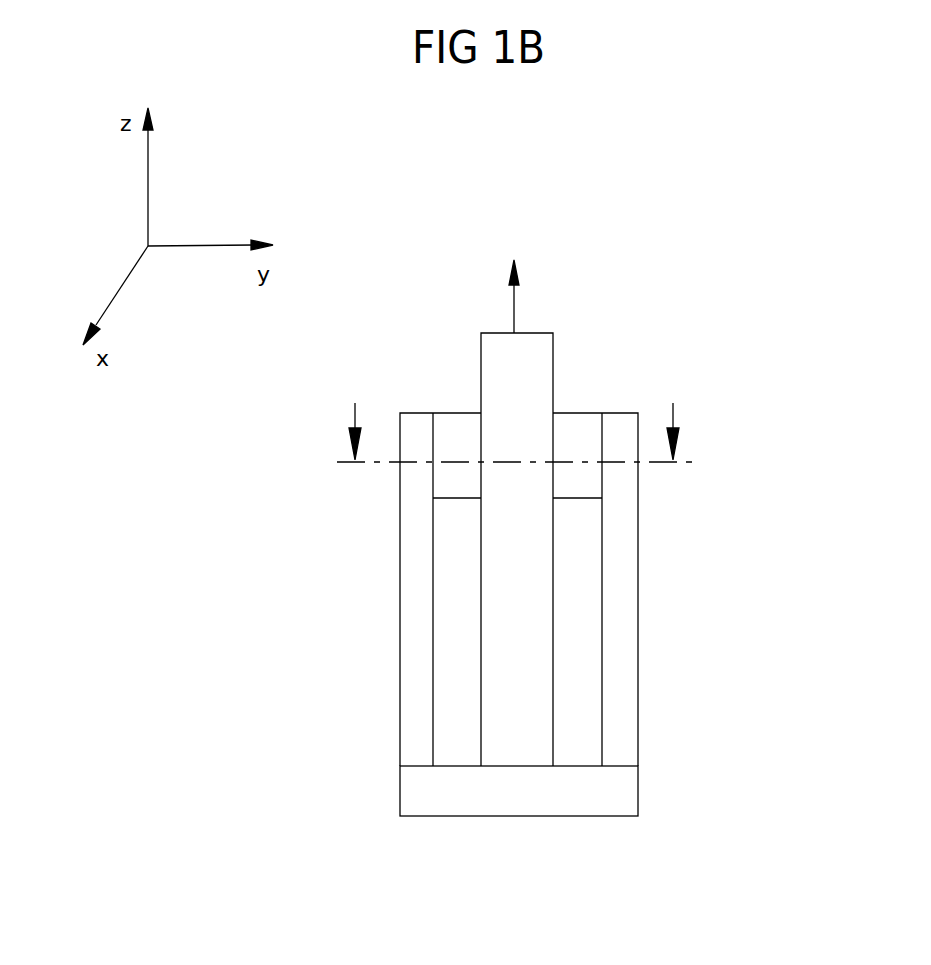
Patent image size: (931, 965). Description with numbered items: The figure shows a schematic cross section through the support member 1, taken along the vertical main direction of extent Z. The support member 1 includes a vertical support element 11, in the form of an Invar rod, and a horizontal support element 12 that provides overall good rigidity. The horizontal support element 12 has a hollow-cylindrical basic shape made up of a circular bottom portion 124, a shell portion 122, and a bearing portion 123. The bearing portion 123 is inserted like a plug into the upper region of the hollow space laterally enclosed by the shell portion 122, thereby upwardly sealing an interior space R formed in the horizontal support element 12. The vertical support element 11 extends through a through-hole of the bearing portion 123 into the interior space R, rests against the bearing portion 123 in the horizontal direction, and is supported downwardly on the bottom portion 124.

The support member 1 is at (698, 280).
The vertical support element 11 is at (493, 374).
The horizontal support element 12 is at (358, 480).
The shell portion 122 is at (615, 612).
The bearing portion 123 is at (585, 438).
The bottom portion 124 is at (438, 790).
The interior space R is at (577, 543).